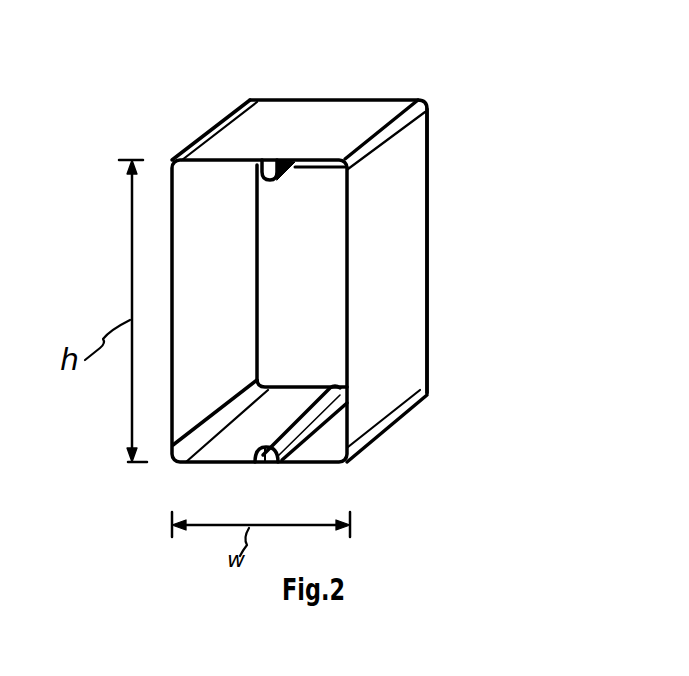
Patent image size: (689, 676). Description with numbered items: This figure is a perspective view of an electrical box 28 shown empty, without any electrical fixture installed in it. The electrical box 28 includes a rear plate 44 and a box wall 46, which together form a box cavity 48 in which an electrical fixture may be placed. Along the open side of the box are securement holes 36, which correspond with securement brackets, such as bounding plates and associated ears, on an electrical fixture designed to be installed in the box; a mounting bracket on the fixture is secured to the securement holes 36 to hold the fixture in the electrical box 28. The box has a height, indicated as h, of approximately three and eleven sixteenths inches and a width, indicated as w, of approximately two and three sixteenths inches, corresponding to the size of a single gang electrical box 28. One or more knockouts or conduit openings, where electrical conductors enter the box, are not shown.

The electrical box 28 is at (450, 75).
The securement holes 36 is at (278, 162).
The rear plate 44 is at (315, 280).
The box wall 46 is at (403, 238).
The box cavity 48 is at (313, 368).